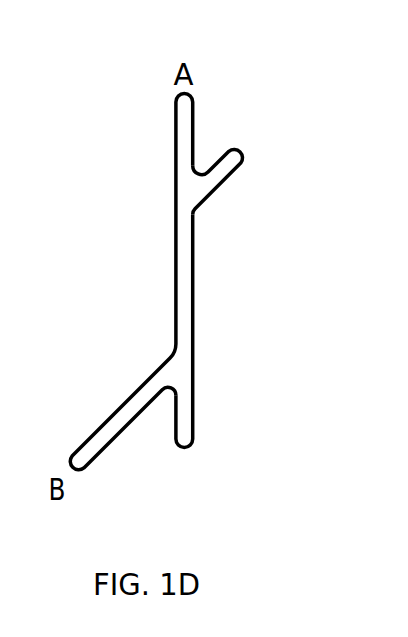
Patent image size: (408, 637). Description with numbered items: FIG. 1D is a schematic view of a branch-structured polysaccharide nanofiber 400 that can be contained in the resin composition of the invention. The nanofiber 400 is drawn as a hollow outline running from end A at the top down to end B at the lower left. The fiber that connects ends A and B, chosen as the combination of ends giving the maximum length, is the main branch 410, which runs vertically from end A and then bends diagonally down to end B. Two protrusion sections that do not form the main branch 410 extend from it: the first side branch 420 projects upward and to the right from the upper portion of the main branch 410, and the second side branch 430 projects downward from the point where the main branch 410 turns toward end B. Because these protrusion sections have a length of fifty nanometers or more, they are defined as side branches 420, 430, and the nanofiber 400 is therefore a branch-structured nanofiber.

The branch-structured nanofiber 400 is at (96, 54).
The main branch 410 is at (183, 137).
The side branch 420 is at (217, 173).
The side branch 430 is at (181, 425).